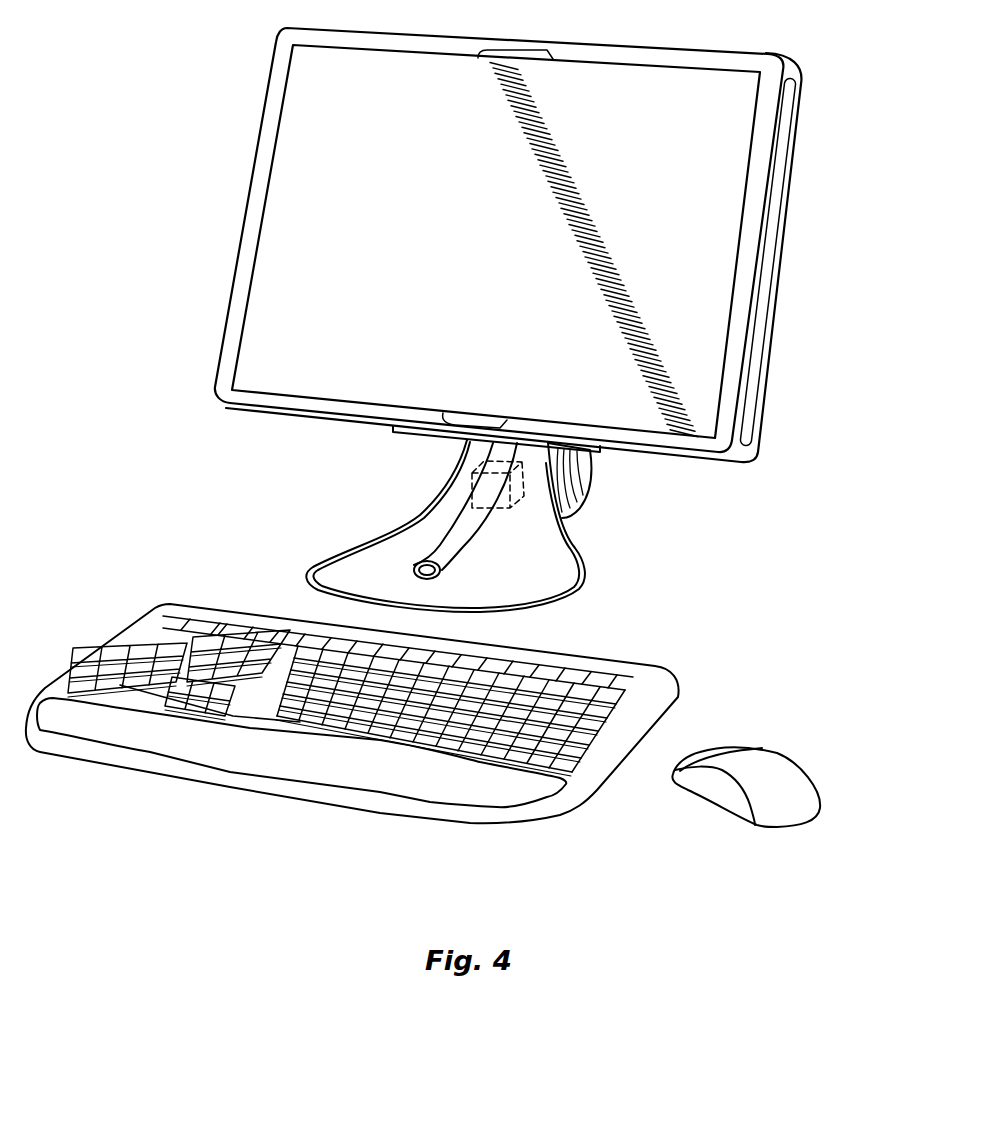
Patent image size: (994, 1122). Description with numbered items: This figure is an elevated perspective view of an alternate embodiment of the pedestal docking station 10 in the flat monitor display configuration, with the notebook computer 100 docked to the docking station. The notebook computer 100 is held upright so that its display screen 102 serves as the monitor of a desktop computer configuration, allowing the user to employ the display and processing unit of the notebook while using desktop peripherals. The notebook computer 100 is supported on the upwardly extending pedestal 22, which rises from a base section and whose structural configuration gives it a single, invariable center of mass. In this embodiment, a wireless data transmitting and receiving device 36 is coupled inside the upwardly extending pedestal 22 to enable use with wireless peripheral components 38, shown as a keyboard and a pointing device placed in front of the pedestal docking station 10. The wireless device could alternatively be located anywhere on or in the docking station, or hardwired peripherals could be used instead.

The pedestal docking station 10 is at (384, 519).
The upwardly extending pedestal 22 is at (570, 467).
The wireless data transmitting and receiving device 36 is at (477, 503).
The wireless peripheral components 38 is at (699, 721).
The notebook computer 100 is at (483, 245).
The display screen 102 is at (693, 230).